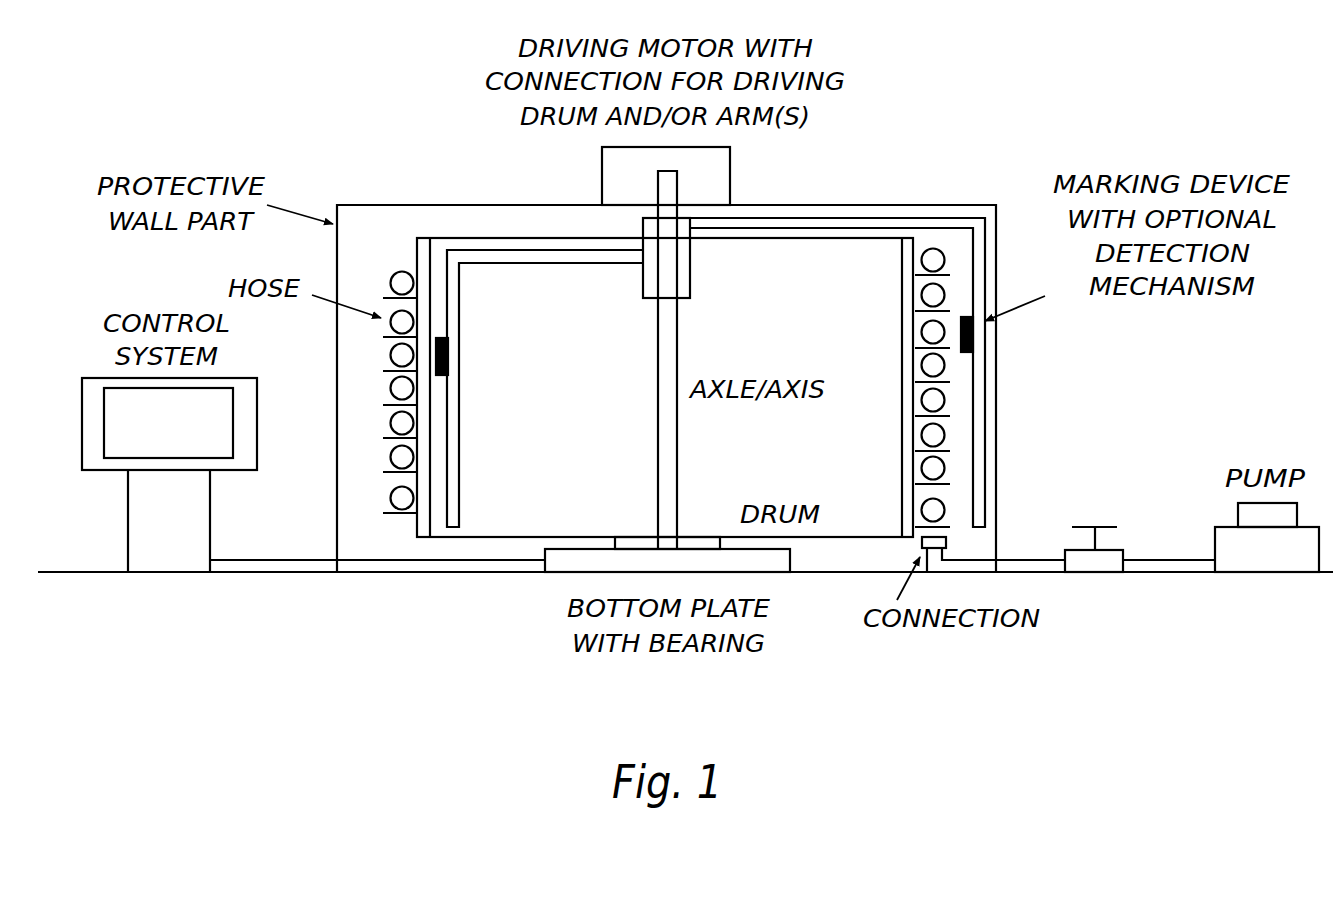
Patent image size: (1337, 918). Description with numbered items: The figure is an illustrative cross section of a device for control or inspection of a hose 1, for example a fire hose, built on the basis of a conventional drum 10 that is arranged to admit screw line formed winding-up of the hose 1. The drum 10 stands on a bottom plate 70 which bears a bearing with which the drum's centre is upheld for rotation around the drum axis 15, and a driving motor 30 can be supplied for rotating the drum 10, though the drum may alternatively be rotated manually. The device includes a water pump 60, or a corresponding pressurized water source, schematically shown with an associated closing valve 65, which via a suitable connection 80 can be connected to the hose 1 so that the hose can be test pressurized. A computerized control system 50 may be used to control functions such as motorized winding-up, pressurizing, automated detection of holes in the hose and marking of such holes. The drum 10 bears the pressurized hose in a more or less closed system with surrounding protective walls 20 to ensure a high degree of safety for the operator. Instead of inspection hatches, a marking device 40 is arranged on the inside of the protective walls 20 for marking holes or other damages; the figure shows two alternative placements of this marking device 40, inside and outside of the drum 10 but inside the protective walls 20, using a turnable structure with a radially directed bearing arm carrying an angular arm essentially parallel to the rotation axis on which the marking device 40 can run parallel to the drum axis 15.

The hose 1 is at (389, 385).
The drum 10 is at (862, 530).
The drum axis 15 is at (656, 413).
The protective walls 20 is at (338, 487).
The driving motor 30 is at (602, 184).
The marking device 40 is at (448, 366).
The control system 50 is at (82, 419).
The water pump 60 is at (1215, 535).
The closing valve 65 is at (1082, 573).
The bottom plate 70 is at (584, 537).
The connection 80 is at (917, 540).